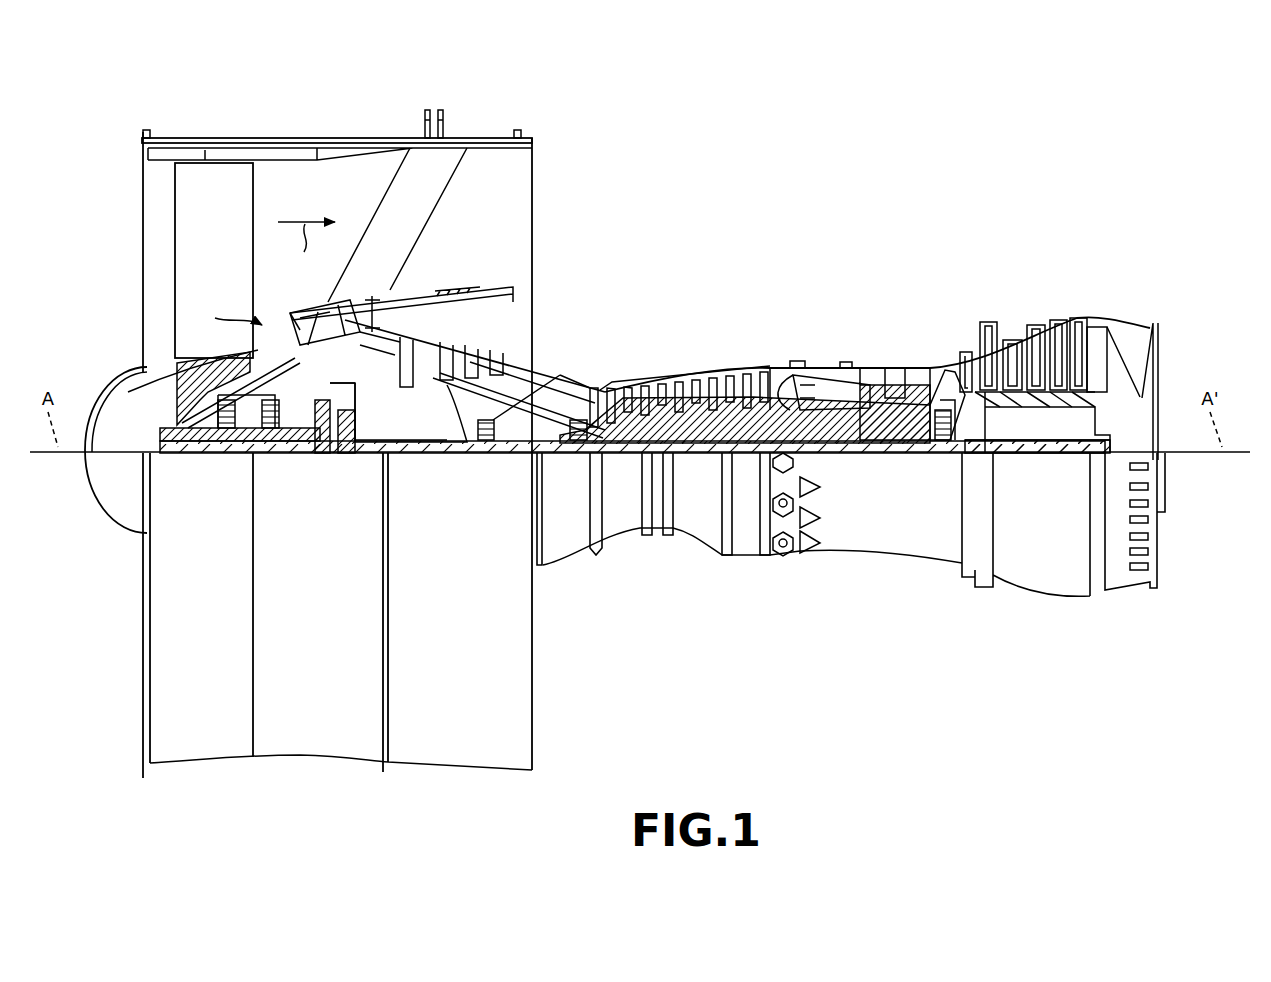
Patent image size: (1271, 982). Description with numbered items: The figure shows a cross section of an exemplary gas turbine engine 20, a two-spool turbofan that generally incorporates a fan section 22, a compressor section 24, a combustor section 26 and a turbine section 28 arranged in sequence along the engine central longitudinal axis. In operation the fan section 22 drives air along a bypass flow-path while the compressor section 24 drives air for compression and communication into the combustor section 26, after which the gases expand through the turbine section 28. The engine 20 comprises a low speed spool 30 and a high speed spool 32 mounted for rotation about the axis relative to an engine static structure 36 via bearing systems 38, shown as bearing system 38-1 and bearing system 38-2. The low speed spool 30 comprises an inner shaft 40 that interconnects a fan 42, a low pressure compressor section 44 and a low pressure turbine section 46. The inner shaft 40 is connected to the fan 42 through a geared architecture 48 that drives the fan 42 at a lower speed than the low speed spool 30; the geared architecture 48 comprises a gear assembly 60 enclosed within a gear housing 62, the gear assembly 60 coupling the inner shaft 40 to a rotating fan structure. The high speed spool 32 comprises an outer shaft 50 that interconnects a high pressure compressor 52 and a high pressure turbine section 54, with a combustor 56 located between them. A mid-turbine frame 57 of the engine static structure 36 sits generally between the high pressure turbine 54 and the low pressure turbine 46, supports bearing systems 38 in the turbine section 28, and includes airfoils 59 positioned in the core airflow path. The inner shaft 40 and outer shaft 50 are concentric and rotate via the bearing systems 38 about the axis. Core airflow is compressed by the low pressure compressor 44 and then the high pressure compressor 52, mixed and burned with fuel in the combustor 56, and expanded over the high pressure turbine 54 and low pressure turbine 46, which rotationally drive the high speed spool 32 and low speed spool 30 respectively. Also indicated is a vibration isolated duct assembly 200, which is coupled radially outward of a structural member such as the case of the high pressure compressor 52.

The gas turbine engine 20 is at (880, 170).
The fan section 22 is at (385, 118).
The compressor section 24 is at (392, 251).
The combustor section 26 is at (878, 251).
The turbine section 28 is at (1097, 251).
The low speed spool 30 is at (705, 488).
The high speed spool 32 is at (745, 418).
The engine static structure 36 is at (125, 766).
The bearing system 38 is at (940, 450).
The bearing system 38-1 is at (224, 432).
The bearing system 38-2 is at (488, 440).
The inner shaft 40 is at (555, 455).
The fan 42 is at (221, 264).
The low pressure compressor section 44 is at (466, 352).
The low pressure turbine section 46 is at (1025, 340).
The geared architecture 48 is at (351, 470).
The outer shaft 50 is at (812, 440).
The high pressure compressor 52 is at (700, 385).
The high pressure turbine section 54 is at (875, 368).
The combustor 56 is at (830, 392).
The mid-turbine frame 57 is at (942, 370).
The airfoils 59 is at (958, 352).
The gear assembly 60 is at (357, 430).
The gear housing 62 is at (352, 390).
The vibration isolated duct assembly 200 is at (583, 349).